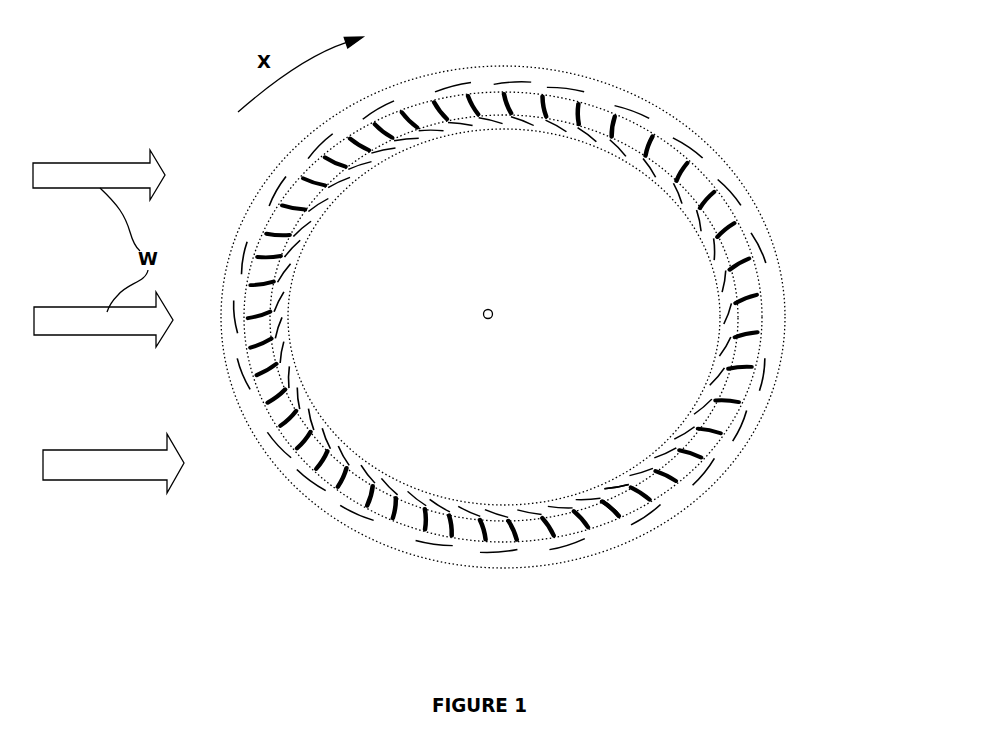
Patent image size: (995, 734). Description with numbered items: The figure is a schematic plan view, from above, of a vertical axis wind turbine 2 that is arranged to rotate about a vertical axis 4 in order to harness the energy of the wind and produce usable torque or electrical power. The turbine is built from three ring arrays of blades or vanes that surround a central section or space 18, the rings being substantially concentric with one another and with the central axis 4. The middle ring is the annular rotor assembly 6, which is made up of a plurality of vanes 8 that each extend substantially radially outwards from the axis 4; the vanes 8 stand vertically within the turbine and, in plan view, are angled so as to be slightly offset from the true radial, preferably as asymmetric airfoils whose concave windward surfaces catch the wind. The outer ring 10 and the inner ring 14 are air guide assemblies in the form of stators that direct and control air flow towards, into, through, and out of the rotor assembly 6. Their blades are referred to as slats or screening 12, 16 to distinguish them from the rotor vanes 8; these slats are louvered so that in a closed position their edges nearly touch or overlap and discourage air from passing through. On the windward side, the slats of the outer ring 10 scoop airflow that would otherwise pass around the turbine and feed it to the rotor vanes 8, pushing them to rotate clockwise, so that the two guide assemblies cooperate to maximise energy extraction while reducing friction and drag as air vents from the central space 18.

The vertical axis wind turbine 2 is at (820, 365).
The vertical axis 4 is at (483, 318).
The rotor assembly 6 is at (606, 528).
The vanes 8 is at (648, 492).
The outer ring 10 is at (729, 161).
The slats 12 is at (785, 318).
The inner ring 14 is at (543, 117).
The screening 16 is at (282, 273).
The central section 18 is at (504, 317).